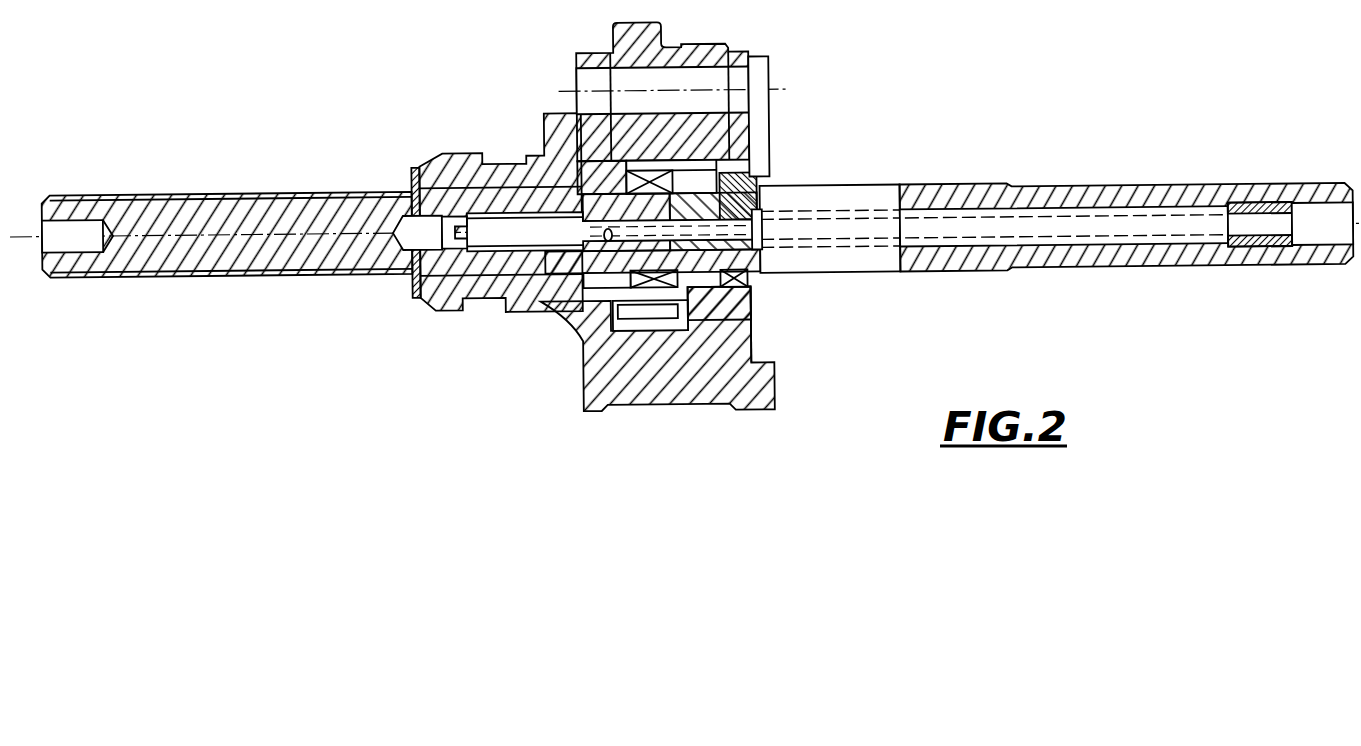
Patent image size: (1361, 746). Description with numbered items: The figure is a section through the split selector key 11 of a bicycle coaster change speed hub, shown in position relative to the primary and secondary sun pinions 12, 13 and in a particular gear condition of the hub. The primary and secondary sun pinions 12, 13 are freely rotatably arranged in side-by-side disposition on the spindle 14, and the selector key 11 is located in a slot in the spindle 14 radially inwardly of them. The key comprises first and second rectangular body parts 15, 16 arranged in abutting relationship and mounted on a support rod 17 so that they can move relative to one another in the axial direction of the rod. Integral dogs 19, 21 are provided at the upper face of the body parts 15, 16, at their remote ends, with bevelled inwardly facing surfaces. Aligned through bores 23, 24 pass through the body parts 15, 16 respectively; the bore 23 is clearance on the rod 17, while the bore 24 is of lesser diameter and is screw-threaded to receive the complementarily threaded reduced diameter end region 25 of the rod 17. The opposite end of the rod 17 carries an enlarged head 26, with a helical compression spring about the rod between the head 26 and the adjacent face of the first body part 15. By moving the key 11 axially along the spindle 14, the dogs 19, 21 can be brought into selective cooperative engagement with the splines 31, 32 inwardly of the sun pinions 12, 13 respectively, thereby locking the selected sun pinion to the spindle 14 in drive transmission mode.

The split selector key 11 is at (772, 196).
The primary sun pinion 12 is at (740, 307).
The secondary sun pinion 13 is at (582, 339).
The spindle 14 is at (973, 186).
The first rectangular body part 15 is at (553, 186).
The second rectangular body part 16 is at (752, 249).
The support rod 17 is at (481, 235).
The dog 19 is at (583, 171).
The dog 21 is at (773, 178).
The through bore 23 is at (606, 243).
The through bore 24 is at (760, 229).
The reduced diameter end region 25 is at (692, 218).
The enlarged head 26 is at (452, 217).
The splines 31 is at (750, 178).
The splines 32 is at (653, 171).